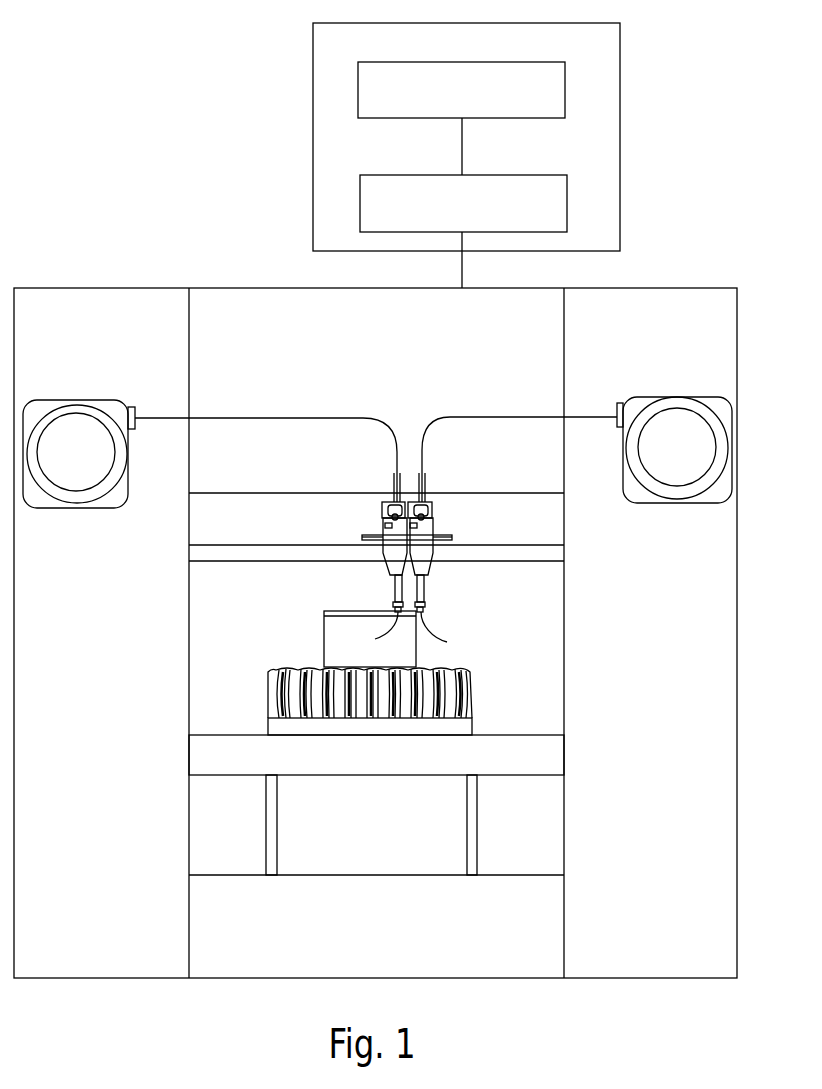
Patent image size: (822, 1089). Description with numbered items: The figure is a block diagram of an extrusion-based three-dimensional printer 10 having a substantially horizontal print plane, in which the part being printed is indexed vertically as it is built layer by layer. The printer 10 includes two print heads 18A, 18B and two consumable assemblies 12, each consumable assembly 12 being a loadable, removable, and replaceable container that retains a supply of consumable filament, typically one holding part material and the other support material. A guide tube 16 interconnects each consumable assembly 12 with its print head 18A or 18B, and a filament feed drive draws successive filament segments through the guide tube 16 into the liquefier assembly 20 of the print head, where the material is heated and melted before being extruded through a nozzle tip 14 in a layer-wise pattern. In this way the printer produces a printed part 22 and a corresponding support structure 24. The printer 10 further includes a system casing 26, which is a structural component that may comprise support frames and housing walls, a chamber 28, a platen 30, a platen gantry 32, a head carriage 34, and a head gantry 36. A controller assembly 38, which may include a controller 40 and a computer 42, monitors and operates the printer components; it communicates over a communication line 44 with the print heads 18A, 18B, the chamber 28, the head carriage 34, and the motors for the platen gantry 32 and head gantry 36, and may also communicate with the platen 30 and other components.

The 3D printer 10 is at (116, 82).
The consumable assembly 12 is at (67, 400).
The nozzle tip 14 is at (409, 633).
The guide tube 16 is at (200, 418).
The print head 18A is at (376, 527).
The print head 18B is at (439, 527).
The liquefier assembly 20 is at (393, 595).
The 3D part 22 is at (332, 652).
The support structure 24 is at (467, 723).
The system casing 26 is at (189, 653).
The chamber 28 is at (196, 688).
The platen 30 is at (558, 767).
The platen gantry 32 is at (488, 859).
The head carriage 34 is at (363, 536).
The head gantry 36 is at (262, 545).
The controller assembly 38 is at (620, 45).
The controller 40 is at (567, 193).
The computer 42 is at (565, 72).
The communication line 44 is at (462, 262).